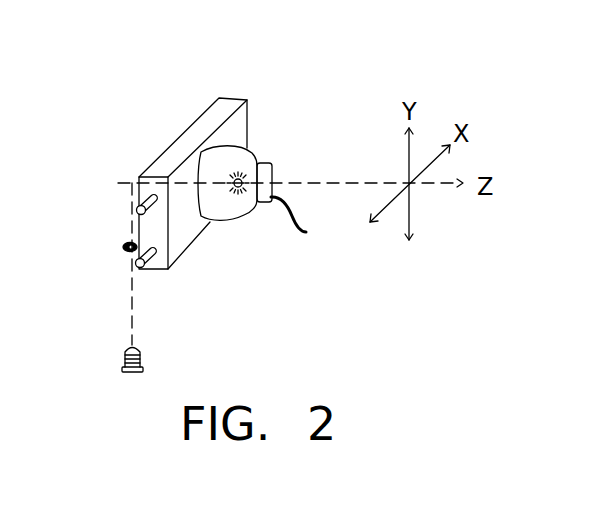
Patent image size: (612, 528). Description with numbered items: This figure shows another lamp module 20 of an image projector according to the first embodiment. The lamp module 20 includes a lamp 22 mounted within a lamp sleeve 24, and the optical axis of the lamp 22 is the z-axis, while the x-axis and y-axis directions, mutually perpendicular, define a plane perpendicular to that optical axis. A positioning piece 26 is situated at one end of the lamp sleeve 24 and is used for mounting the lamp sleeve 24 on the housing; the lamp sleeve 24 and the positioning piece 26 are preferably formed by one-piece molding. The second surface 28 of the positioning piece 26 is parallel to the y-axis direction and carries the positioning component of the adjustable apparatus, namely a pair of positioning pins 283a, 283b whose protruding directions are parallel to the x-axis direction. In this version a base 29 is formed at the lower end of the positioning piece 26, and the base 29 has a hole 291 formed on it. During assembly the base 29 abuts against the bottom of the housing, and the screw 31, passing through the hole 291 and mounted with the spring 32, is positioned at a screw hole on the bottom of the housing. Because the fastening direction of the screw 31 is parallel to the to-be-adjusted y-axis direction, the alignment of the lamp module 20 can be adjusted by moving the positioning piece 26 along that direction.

The lamp module 20 is at (273, 116).
The lamp 22 is at (243, 167).
The lamp sleeve 24 is at (237, 221).
The positioning piece 26 is at (203, 247).
The second surface 28 is at (155, 272).
The positioning pin 283a is at (136, 210).
The positioning pin 283b is at (136, 266).
The base 29 is at (121, 251).
The hole 291 is at (126, 246).
The screw 31 is at (129, 373).
The spring 32 is at (124, 356).